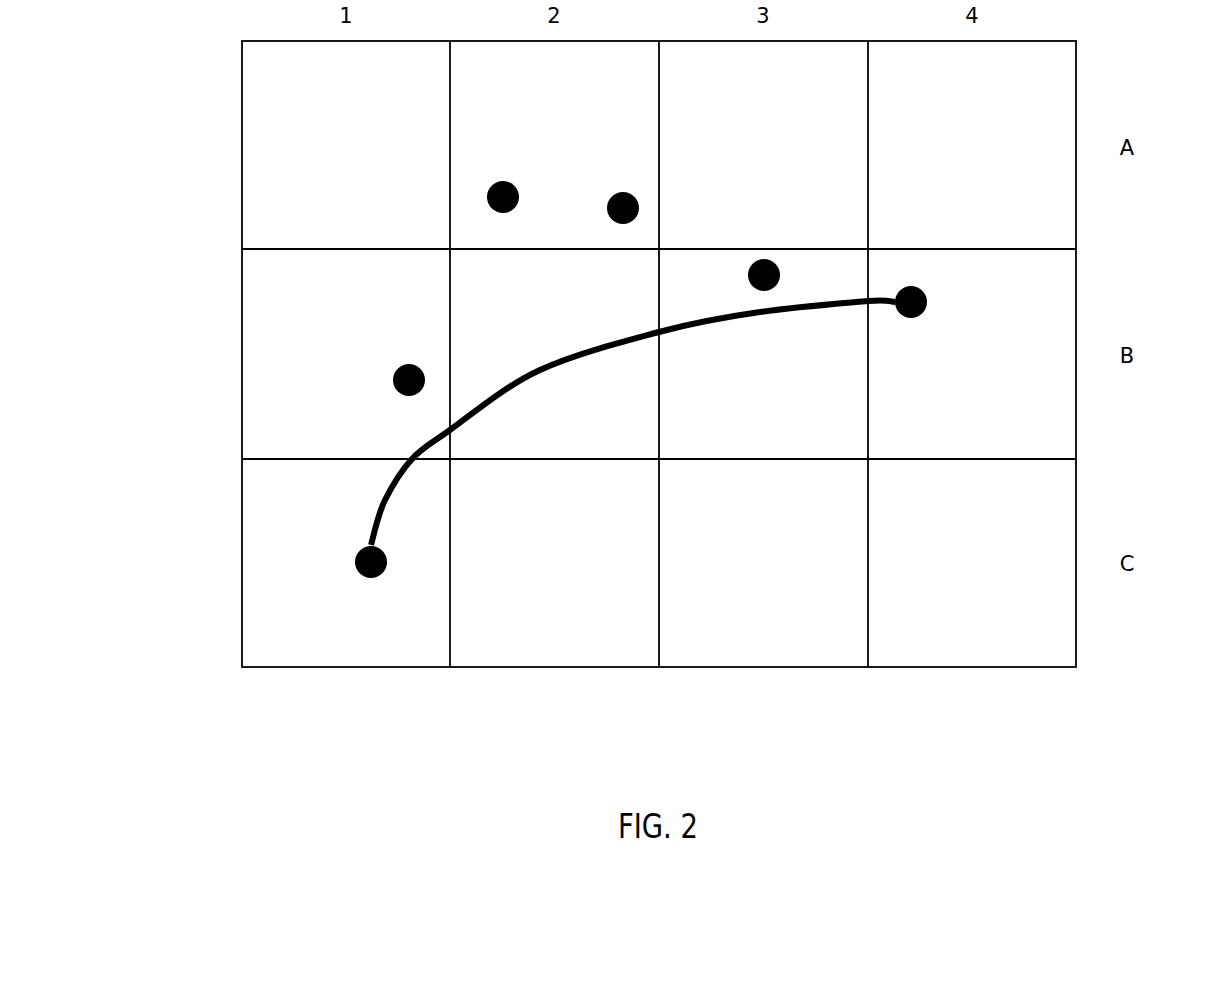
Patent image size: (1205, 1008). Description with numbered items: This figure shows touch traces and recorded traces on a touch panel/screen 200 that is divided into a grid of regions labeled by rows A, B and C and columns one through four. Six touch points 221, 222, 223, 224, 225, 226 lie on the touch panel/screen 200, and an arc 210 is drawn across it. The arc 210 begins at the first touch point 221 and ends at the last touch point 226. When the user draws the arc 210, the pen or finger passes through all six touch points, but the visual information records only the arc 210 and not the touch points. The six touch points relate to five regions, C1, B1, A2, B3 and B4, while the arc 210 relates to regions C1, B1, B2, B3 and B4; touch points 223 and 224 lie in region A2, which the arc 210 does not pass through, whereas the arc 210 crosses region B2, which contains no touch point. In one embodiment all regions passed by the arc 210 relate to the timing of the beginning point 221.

The touch panel/screen 200 is at (1076, 695).
The arc 210 is at (487, 403).
The touch point 221 is at (364, 574).
The touch point 222 is at (396, 393).
The touch point 223 is at (511, 181).
The touch point 224 is at (627, 192).
The touch point 225 is at (772, 262).
The touch point 226 is at (895, 312).